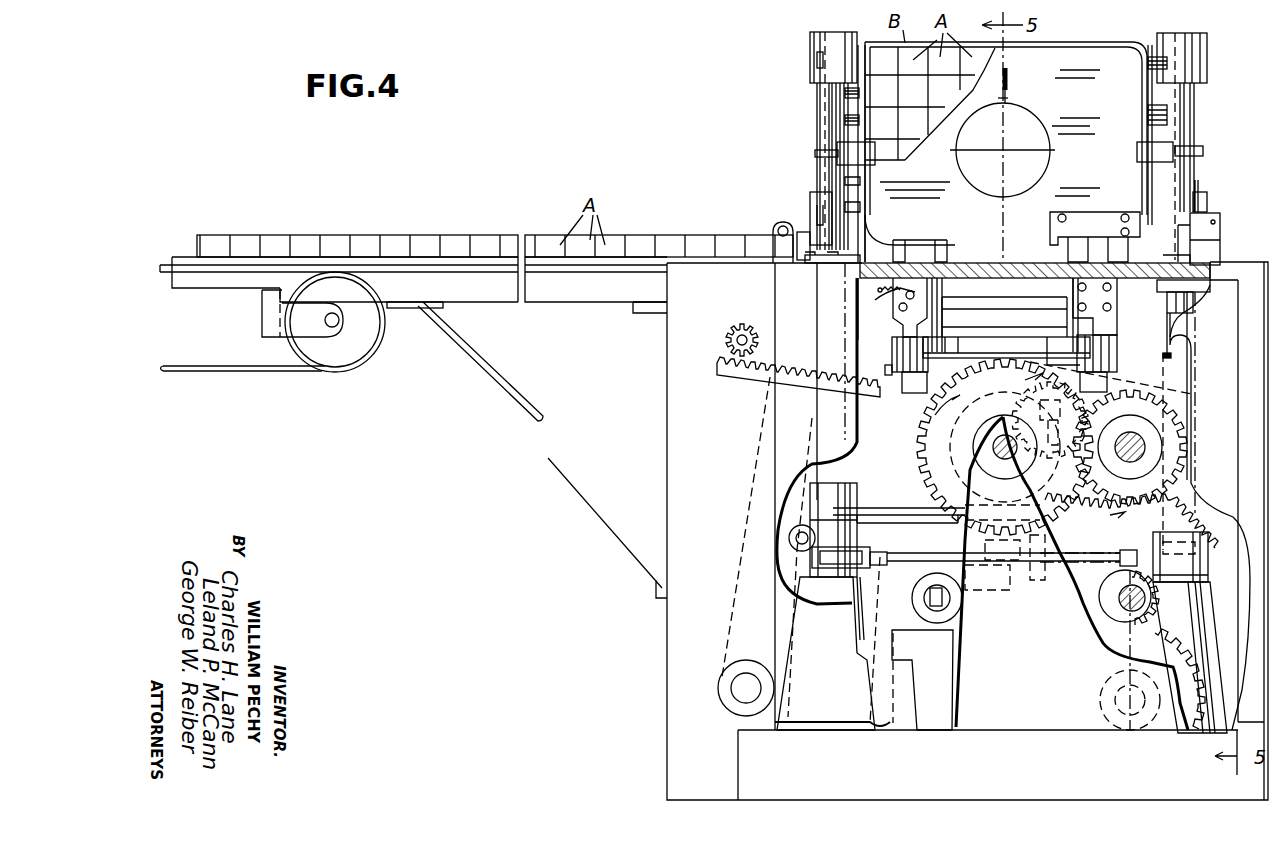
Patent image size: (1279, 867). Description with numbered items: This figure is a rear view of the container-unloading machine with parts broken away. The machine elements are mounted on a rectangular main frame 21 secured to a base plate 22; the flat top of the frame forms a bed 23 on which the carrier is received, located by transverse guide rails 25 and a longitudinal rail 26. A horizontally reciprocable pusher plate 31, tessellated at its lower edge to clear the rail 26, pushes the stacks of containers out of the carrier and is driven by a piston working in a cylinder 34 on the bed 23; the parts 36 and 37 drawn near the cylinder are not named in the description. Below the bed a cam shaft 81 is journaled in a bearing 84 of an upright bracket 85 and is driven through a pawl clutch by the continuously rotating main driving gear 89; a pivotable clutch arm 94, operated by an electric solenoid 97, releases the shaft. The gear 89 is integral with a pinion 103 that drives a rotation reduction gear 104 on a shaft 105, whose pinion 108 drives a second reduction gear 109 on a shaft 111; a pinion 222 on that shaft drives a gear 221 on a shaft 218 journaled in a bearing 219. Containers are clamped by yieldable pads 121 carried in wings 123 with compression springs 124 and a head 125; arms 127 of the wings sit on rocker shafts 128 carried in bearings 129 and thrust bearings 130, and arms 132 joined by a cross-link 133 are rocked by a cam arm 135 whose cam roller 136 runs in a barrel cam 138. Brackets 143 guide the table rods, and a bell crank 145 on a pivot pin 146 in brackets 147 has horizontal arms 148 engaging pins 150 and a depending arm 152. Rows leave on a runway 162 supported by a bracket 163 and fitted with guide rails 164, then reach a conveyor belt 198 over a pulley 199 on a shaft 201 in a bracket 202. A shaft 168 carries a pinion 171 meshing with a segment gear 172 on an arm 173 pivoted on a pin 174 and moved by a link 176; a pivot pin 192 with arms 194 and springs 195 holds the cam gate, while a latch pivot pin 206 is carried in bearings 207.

The main frame 21 is at (667, 438).
The base plate 22 is at (748, 762).
The bed 23 is at (993, 262).
The guide rails 25 is at (862, 248).
The longitudinal rail 26 is at (905, 245).
The pusher plate 31 is at (1062, 62).
The cylinder 34 is at (1032, 157).
The rod 36 is at (1010, 75).
The guide 37 is at (1010, 100).
The cam shaft 81 is at (993, 450).
The bearing 84 is at (990, 425).
The bracket 85 is at (1026, 712).
The driving gear 89 is at (920, 440).
The clutch arm 94 is at (1012, 605).
The electric solenoid 97 is at (912, 600).
The pinion 103 is at (1018, 425).
The rotation reduction gear 104 is at (1178, 378).
The shaft 105 is at (1140, 440).
The pinion 108 is at (1170, 445).
The rotation reduction gear 109 is at (1185, 515).
The shaft 111 is at (1118, 598).
The pads 121 is at (860, 115).
The wings 123 is at (817, 108).
The compression springs 124 is at (870, 172).
The head 125 is at (817, 118).
The arms 127 is at (818, 45).
The rocker shafts 128 is at (817, 135).
The bearings 129 is at (1196, 308).
The thrust bearings 130 is at (834, 590).
The arms 132 is at (812, 555).
The cross-link 133 is at (900, 561).
The cam arm 135 is at (893, 508).
The cam roller 136 is at (1040, 482).
The barrel cam 138 is at (965, 470).
The brackets 143 is at (862, 330).
The bell crank 145 is at (1005, 325).
The pivot pin 146 is at (857, 360).
The brackets 147 is at (1067, 300).
The horizontal arms 148 is at (893, 387).
The pins 150 is at (893, 370).
The depending arm 152 is at (1069, 423).
The runway 162 is at (610, 285).
The bracket 163 is at (523, 404).
The guide rails 164 is at (550, 265).
The shaft 168 is at (737, 340).
The pinion 171 is at (752, 322).
The segment gear 172 is at (722, 378).
The arm 173 is at (790, 513).
The pivot pin 174 is at (740, 688).
The link 176 is at (899, 526).
The pivot pin 192 is at (920, 295).
The arms 194 is at (875, 300).
The springs 195 is at (878, 288).
The conveyor belt 198 is at (228, 371).
The pulley 199 is at (331, 352).
The shaft 201 is at (340, 323).
The bracket 202 is at (262, 318).
The pivot pin 206 is at (805, 233).
The bearings 207 is at (773, 238).
The shaft 218 is at (1118, 705).
The bearing 219 is at (1102, 690).
The gear 221 is at (1150, 620).
The pinion 222 is at (1130, 615).